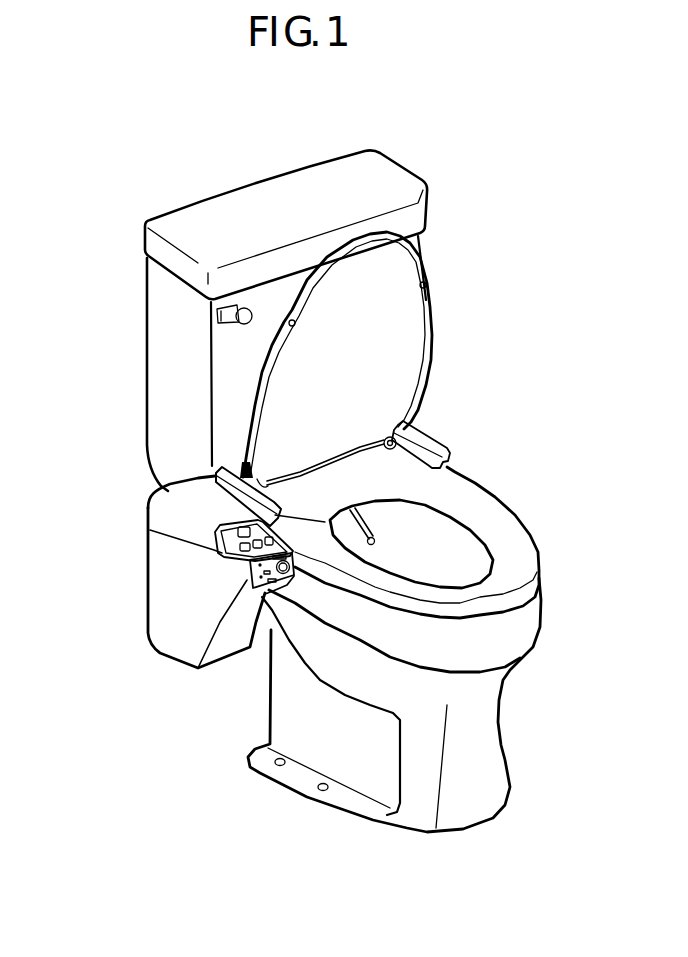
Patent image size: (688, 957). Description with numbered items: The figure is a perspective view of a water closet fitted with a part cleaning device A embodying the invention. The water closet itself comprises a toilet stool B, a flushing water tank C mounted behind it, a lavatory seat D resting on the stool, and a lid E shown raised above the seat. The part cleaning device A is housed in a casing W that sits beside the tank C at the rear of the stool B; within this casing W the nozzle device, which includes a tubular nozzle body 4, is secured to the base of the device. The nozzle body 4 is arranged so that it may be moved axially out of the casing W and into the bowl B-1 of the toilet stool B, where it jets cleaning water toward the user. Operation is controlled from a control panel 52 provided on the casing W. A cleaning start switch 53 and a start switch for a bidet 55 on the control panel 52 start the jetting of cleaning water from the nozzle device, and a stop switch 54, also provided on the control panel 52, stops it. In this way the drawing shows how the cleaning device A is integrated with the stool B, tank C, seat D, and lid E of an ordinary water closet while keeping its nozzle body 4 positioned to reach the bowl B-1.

The part cleaning device A is at (187, 582).
The toilet stool B is at (495, 743).
The bowl B-1 is at (443, 563).
The flushing water tank C is at (155, 345).
The lavatory seat D is at (467, 496).
The lid E is at (410, 320).
The casing W is at (148, 500).
The tubular nozzle body 4 is at (363, 517).
The control panel 52 is at (250, 593).
The cleaning start switch 53 is at (252, 562).
The stop switch 54 is at (244, 528).
The start switch for a bidet 55 is at (279, 530).